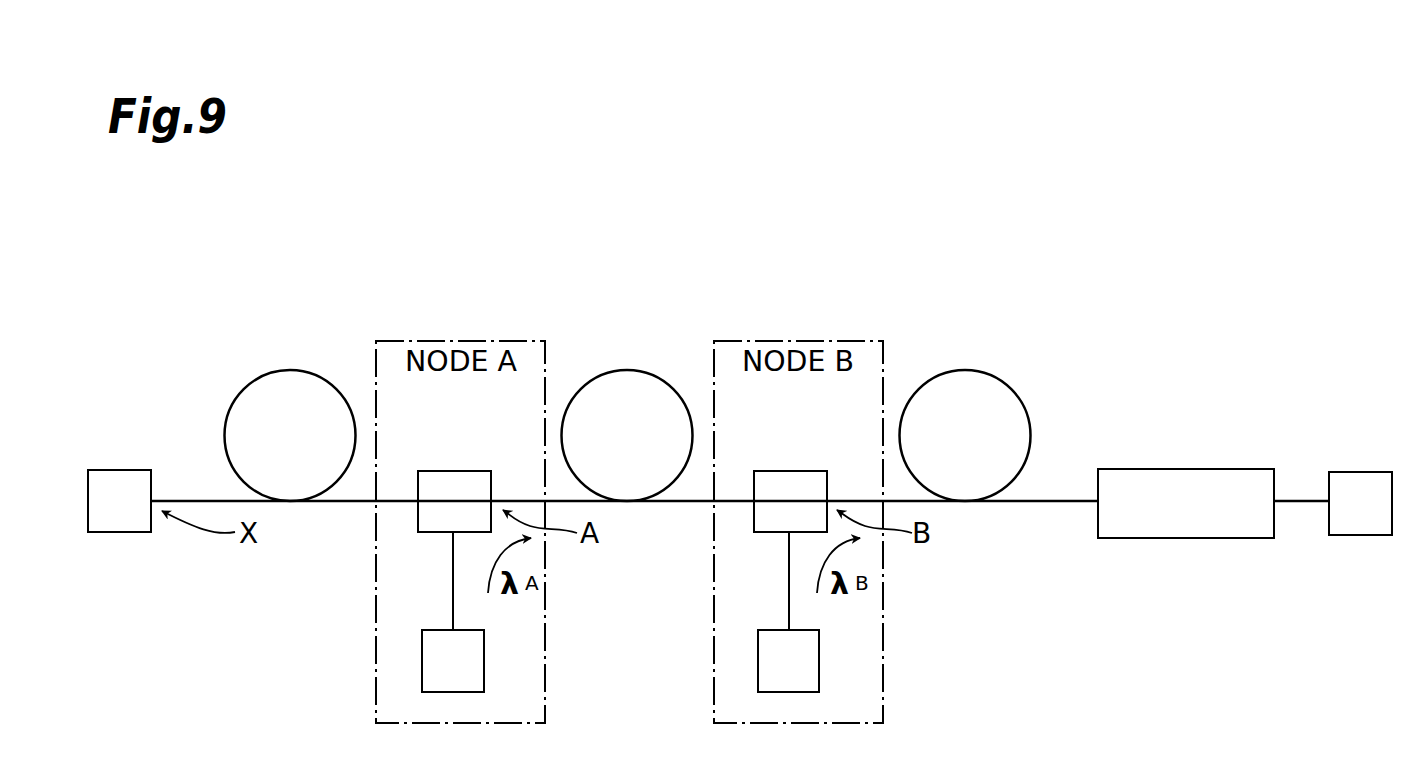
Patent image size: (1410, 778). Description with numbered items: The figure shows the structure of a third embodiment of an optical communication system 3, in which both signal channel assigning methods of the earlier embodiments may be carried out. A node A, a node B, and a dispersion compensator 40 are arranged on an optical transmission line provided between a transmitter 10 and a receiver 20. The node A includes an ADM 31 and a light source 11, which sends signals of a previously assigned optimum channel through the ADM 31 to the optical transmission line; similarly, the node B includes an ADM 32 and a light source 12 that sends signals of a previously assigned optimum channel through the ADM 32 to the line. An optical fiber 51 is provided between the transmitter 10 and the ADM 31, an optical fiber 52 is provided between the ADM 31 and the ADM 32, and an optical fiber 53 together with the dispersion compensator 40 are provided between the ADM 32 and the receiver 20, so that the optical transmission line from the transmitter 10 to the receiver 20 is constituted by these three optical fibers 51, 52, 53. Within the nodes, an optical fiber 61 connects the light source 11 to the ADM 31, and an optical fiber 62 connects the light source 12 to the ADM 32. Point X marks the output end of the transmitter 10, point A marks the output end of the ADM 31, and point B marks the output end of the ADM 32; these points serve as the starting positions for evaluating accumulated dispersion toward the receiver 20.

The optical communication system 3 is at (985, 236).
The transmitter 10 is at (117, 470).
The receiver 20 is at (1362, 472).
The light source 11 is at (484, 672).
The light source 12 is at (819, 673).
The ADM 31 is at (450, 471).
The ADM 32 is at (786, 471).
The dispersion compensator 40 is at (1178, 469).
The optical fiber 51 is at (290, 369).
The optical fiber 52 is at (625, 369).
The optical fiber 53 is at (963, 369).
The optical fiber 61 is at (452, 590).
The optical fiber 62 is at (788, 600).